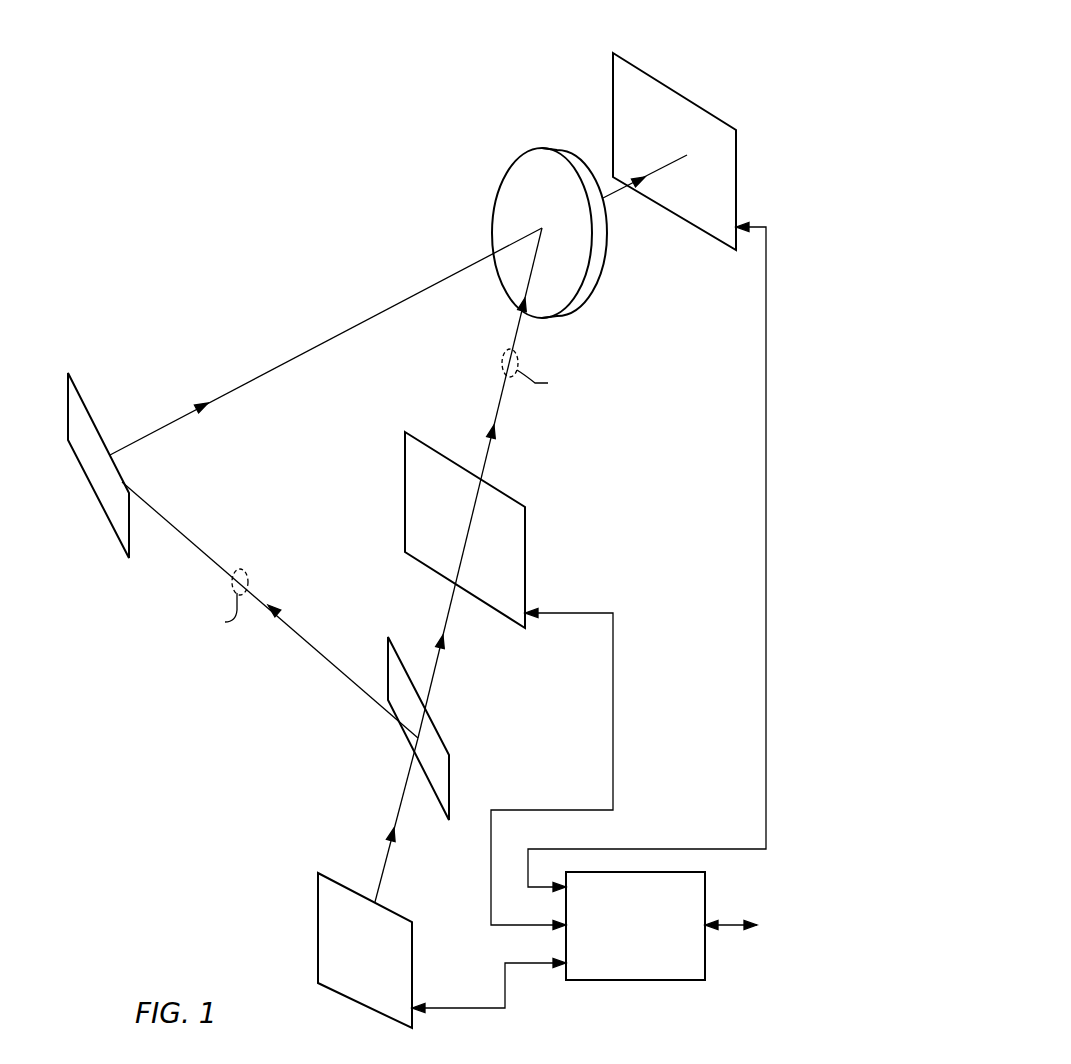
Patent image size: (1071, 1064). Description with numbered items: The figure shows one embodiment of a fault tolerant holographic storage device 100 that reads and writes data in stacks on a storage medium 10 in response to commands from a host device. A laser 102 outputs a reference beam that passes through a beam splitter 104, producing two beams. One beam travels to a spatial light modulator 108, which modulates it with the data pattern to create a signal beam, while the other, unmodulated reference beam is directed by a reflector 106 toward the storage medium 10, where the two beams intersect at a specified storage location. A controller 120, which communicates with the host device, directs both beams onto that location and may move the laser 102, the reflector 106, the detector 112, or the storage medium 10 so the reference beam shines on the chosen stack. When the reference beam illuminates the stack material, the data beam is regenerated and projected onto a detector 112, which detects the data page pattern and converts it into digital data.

The storage device 100 is at (240, 187).
The storage medium 10 is at (508, 182).
The laser 102 is at (318, 915).
The beam splitter 104 is at (440, 742).
The reflector 106 is at (88, 412).
The spatial light modulator 108 is at (508, 495).
The detector 112 is at (613, 85).
The controller 120 is at (617, 949).